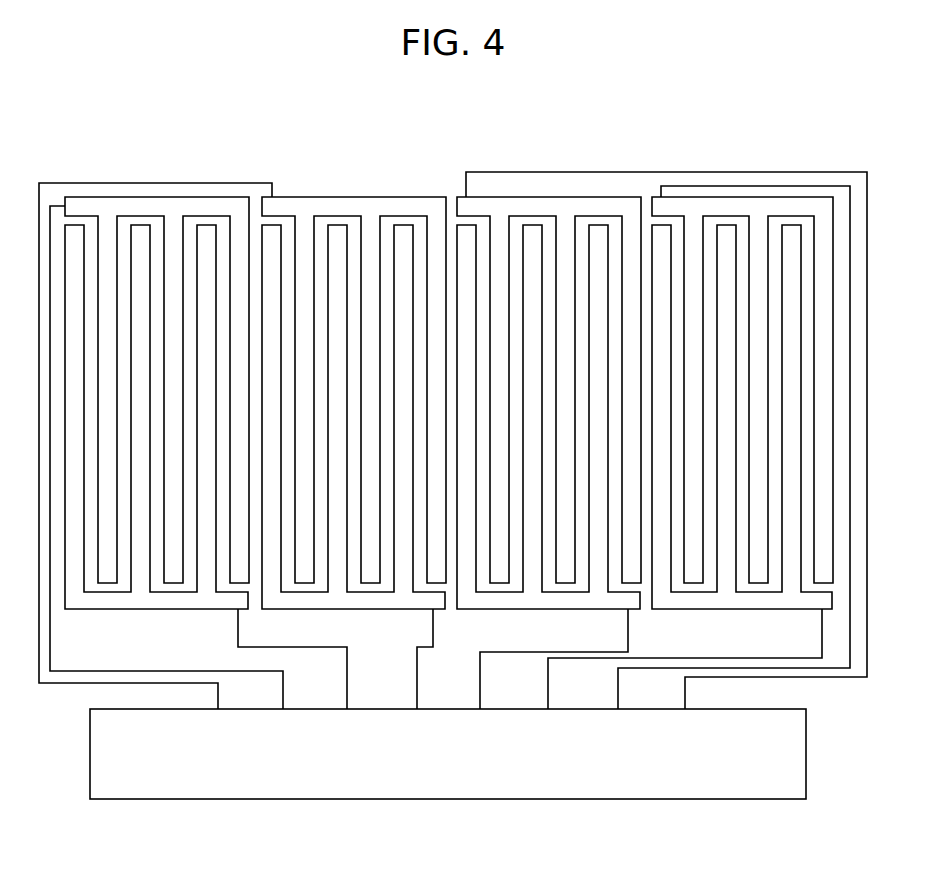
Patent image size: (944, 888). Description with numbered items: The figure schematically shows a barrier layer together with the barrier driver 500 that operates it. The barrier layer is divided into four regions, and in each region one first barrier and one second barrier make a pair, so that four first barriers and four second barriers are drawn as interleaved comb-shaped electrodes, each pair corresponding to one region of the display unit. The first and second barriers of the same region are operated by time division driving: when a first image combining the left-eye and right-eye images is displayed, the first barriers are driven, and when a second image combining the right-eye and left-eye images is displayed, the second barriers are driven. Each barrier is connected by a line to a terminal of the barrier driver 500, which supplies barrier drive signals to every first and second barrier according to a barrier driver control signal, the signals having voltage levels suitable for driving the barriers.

The barrier driver 500 is at (770, 800).